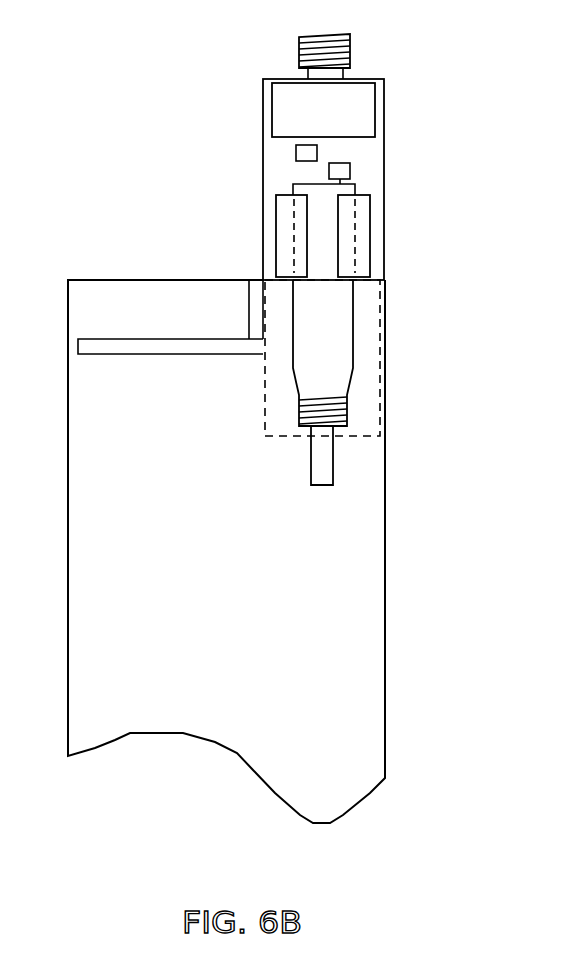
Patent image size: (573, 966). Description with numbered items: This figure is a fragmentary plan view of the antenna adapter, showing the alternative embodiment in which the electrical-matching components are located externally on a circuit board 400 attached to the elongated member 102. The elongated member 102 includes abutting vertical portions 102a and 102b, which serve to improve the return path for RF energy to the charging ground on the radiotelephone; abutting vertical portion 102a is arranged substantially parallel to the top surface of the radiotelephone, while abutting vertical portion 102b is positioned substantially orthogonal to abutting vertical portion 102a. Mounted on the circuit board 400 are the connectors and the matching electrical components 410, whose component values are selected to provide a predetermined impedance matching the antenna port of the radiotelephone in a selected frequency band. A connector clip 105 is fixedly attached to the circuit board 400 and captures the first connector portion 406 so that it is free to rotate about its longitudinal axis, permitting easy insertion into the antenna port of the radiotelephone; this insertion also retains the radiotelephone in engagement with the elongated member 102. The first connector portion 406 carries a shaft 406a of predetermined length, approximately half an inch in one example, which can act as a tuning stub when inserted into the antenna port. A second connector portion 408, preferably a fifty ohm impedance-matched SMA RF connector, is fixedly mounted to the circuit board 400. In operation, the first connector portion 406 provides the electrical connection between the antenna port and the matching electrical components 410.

The elongated member 102 is at (385, 553).
The abutting vertical portion 102a is at (138, 339).
The abutting vertical portion 102b is at (248, 306).
The connector clip 105 is at (370, 232).
The circuit board 400 is at (384, 107).
The first connector portion 406 is at (357, 358).
The shaft 406a is at (333, 467).
The second connector portion 408 is at (357, 80).
The matching electrical components 410 is at (296, 152).